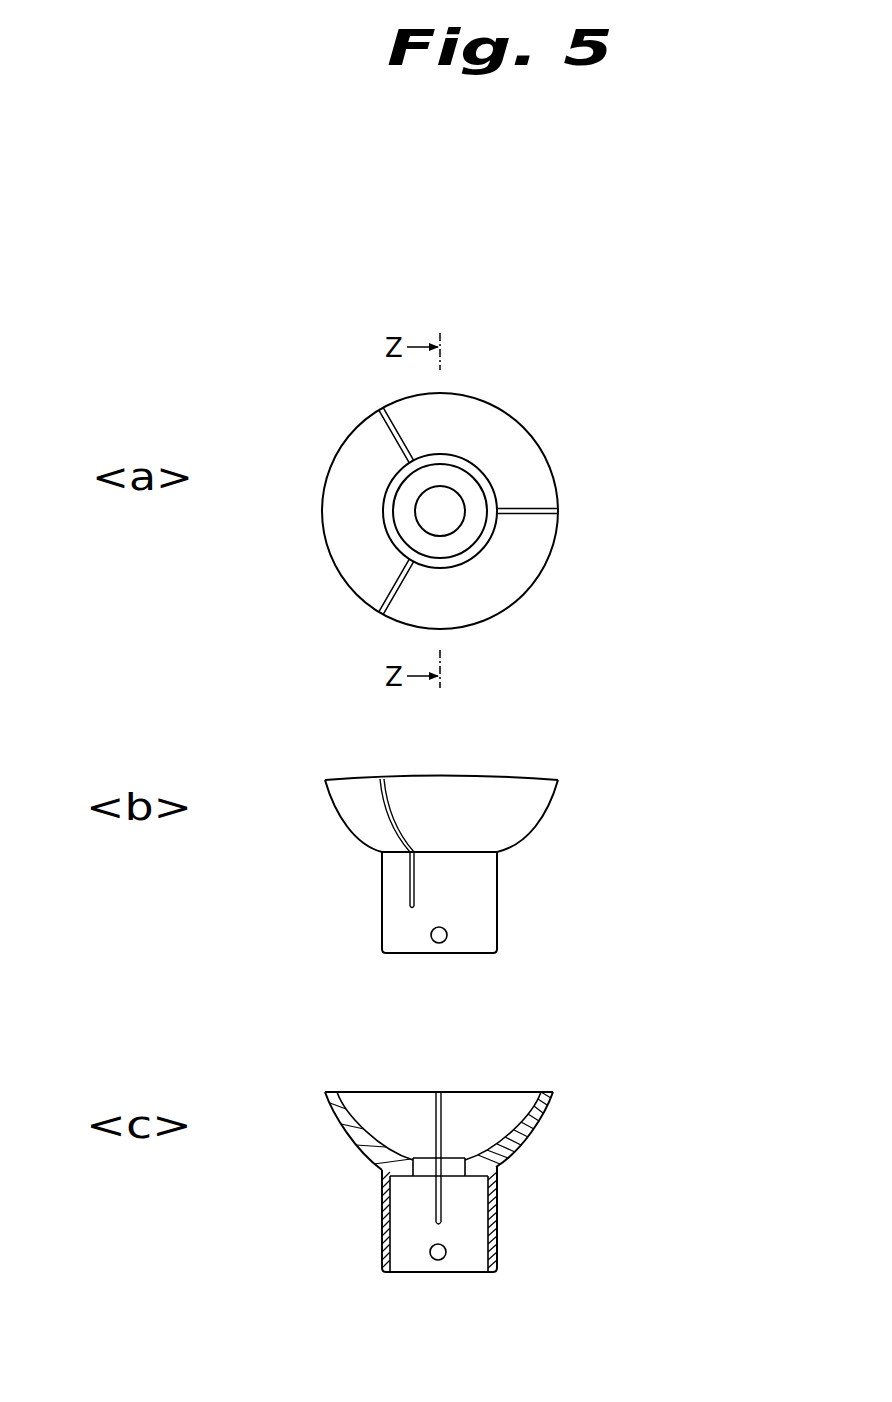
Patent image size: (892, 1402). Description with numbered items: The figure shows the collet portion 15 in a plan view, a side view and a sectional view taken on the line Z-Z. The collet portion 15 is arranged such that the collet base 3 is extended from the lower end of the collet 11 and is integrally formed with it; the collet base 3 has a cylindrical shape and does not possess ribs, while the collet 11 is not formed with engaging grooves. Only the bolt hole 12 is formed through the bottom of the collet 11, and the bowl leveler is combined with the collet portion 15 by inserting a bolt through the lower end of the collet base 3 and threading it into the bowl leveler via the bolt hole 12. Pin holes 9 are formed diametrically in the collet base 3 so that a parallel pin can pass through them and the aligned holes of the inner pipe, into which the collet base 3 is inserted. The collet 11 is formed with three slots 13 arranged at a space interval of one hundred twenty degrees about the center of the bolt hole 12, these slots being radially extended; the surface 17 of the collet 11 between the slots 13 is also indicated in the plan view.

In FIG. 5B, the collet base 3 is at (497, 905).
In FIG. 5C, the collet base 3 is at (497, 1218).
In FIG. 5B, the pin hole 9 is at (438, 943).
In FIG. 5C, the pin hole 9 is at (438, 1260).
In FIG. 5A, the collet 11 is at (547, 568).
In FIG. 5B, the collet 11 is at (552, 803).
In FIG. 5C, the collet 11 is at (547, 1120).
In FIG. 5A, the bolt hole 12 is at (448, 495).
In FIG. 5C, the bolt hole 12 is at (452, 1160).
In FIG. 5A, the slot 13 is at (375, 433).
In FIG. 5A, the collet portion 15 is at (632, 485).
In FIG. 5B, the collet portion 15 is at (632, 873).
In FIG. 5C, the collet portion 15 is at (632, 1180).
In FIG. 5A, the flat surface 17 is at (508, 433).